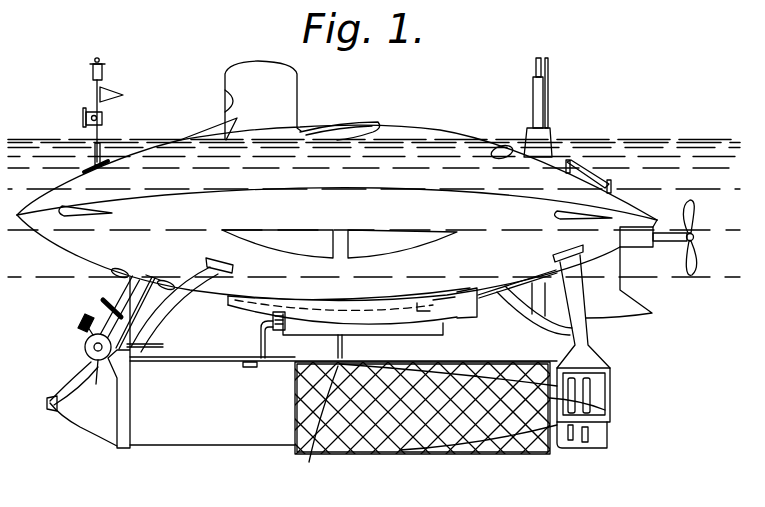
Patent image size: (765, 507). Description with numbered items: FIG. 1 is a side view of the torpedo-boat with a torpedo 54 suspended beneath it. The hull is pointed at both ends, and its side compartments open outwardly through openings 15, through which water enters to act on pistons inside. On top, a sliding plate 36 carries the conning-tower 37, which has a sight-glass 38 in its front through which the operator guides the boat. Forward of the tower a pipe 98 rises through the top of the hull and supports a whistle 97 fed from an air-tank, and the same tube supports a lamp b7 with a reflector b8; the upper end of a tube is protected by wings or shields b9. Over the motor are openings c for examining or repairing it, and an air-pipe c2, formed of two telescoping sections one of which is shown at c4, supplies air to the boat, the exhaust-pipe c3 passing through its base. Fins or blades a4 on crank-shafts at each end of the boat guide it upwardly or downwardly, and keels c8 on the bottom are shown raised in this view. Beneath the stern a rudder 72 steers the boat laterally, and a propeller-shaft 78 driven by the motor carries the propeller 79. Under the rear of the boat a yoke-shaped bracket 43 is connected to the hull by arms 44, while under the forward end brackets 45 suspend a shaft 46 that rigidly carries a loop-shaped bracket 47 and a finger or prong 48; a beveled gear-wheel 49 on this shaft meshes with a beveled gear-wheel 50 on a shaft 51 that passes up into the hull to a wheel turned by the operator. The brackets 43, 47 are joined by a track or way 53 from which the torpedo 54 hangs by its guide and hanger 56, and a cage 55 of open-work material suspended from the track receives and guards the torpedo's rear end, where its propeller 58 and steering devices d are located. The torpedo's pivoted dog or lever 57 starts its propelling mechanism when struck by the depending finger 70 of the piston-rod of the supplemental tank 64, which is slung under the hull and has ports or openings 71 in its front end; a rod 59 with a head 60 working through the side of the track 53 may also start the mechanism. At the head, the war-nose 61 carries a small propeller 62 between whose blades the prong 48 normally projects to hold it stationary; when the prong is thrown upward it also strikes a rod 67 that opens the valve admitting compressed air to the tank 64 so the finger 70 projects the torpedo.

The openings 15 is at (339, 244).
The sliding plate 36 is at (340, 127).
The conning-tower 37 is at (302, 96).
The sight-glass 38 is at (224, 100).
The bracket 43 is at (610, 380).
The arms 44 is at (540, 330).
The brackets 45 is at (190, 329).
The shaft 46 is at (93, 380).
The loop or ring-shaped bracket 47 is at (131, 415).
The finger or prong 48 is at (66, 386).
The beveled gear-wheel 49 is at (85, 344).
The beveled gear-wheel 50 is at (81, 317).
The shaft 51 is at (110, 296).
The track or way 53 is at (442, 364).
The torpedo 54 is at (343, 401).
The cage 55 is at (441, 457).
The guide and hanger 56 is at (251, 368).
The pivoted dog or lever 57 is at (319, 423).
The propeller 58 is at (590, 433).
The rod 59 is at (344, 343).
The head 60 is at (330, 346).
The war-nose 61 is at (60, 415).
The small propeller 62 is at (47, 408).
The supplemental tank 64 is at (416, 335).
The rod 67 is at (141, 291).
The finger 70 is at (262, 338).
The ports or openings 71 is at (287, 328).
The rudder 72 is at (619, 272).
The propeller-shaft 78 is at (683, 241).
The propeller 79 is at (697, 253).
The whistle 97 is at (104, 72).
The pipe 98 is at (102, 130).
The fins or blades a4 is at (73, 213).
The lamp b7 is at (99, 107).
The reflector b8 is at (83, 122).
The wings or shields b9 is at (200, 133).
The openings c is at (503, 148).
The air-pipe c2 is at (548, 106).
The exhaust-pipe c3 is at (548, 95).
The air-pipe section c4 is at (536, 66).
The keels c8 is at (465, 316).
The steering devices d is at (528, 362).